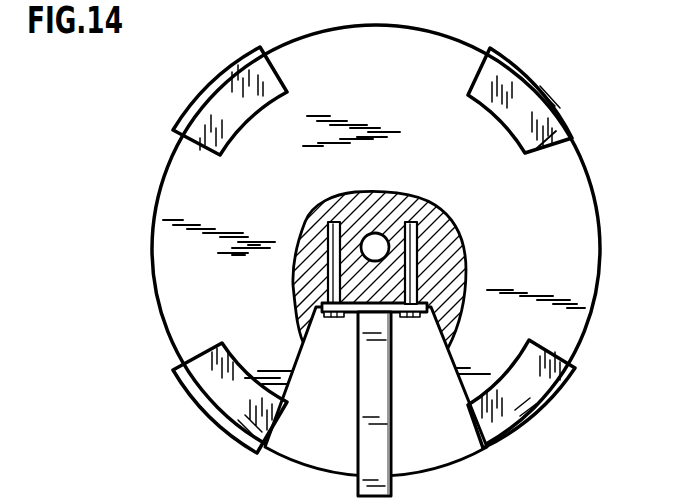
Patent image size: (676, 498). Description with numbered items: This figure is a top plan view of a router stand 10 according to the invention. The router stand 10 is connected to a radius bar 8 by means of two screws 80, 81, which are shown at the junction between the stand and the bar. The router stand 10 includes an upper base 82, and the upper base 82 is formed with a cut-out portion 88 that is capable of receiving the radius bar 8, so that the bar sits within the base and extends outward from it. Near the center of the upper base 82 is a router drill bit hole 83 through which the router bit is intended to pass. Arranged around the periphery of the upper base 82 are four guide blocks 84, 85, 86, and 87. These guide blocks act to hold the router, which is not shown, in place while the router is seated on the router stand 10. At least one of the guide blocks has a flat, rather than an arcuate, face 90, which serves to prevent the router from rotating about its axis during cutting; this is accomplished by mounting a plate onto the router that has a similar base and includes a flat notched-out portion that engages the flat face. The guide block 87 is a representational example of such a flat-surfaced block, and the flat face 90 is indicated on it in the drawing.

The router stand 10 is at (605, 279).
The radius bar 8 is at (392, 480).
The screw 80 is at (341, 318).
The screw 81 is at (410, 318).
The upper base 82 is at (512, 222).
The router drill bit hole 83 is at (371, 233).
The guide block 84 is at (202, 98).
The guide block 85 is at (206, 420).
The guide block 86 is at (538, 417).
The guide block 87 is at (558, 100).
The cut-out portion 88 is at (433, 449).
The flat face 90 is at (531, 150).